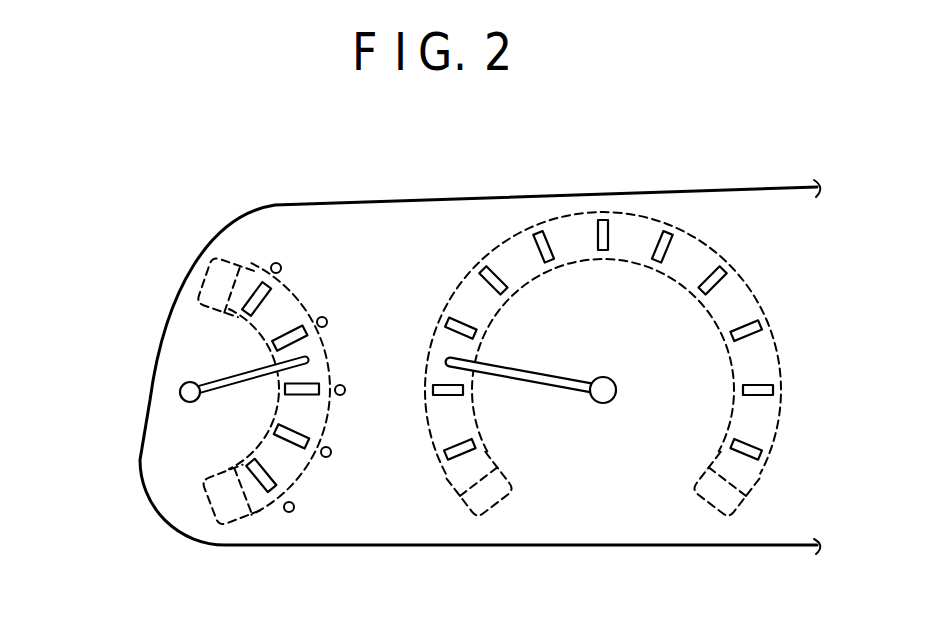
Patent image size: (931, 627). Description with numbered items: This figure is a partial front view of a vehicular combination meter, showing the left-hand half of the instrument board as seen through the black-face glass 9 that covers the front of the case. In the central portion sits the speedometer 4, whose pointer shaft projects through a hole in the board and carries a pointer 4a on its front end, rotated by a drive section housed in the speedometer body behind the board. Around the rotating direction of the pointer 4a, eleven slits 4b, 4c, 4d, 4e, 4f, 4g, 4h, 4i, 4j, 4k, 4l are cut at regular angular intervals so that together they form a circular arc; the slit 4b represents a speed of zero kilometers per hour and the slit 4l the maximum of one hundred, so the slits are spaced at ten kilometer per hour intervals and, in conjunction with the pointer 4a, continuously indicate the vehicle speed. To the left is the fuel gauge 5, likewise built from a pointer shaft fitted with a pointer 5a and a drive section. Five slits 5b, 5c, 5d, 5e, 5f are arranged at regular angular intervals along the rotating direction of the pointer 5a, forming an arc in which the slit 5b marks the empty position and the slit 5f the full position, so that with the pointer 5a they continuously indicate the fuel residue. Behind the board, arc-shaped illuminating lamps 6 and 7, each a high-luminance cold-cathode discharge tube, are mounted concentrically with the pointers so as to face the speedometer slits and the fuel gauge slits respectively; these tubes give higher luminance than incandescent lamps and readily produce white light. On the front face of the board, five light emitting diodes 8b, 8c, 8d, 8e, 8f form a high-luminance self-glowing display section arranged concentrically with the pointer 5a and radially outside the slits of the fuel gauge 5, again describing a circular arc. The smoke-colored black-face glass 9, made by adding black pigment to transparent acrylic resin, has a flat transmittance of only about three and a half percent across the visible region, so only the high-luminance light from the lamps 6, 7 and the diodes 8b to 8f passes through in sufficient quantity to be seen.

The speedometer 4 is at (536, 468).
The pointer 4a is at (571, 397).
The slit 4b is at (446, 464).
The slit 4c is at (470, 393).
The slit 4d is at (455, 320).
The slit 4e is at (492, 272).
The slit 4f is at (551, 245).
The slit 4g is at (608, 228).
The slit 4h is at (668, 238).
The slit 4i is at (722, 265).
The slit 4j is at (762, 330).
The slit 4k is at (772, 392).
The slit 4l is at (758, 452).
The fuel gauge 5 is at (195, 320).
The pointer 5a is at (218, 376).
The slit 5b is at (265, 492).
The slit 5c is at (308, 440).
The slit 5d is at (316, 386).
The slit 5e is at (296, 336).
The slit 5f is at (252, 292).
The illuminating lamp 6 is at (757, 488).
The illuminating lamp 7 is at (303, 473).
The light emitting diode 8b is at (289, 512).
The light emitting diode 8c is at (331, 455).
The light emitting diode 8d is at (345, 390).
The light emitting diode 8e is at (327, 321).
The light emitting diode 8f is at (276, 263).
The black-face glass 9 is at (767, 196).